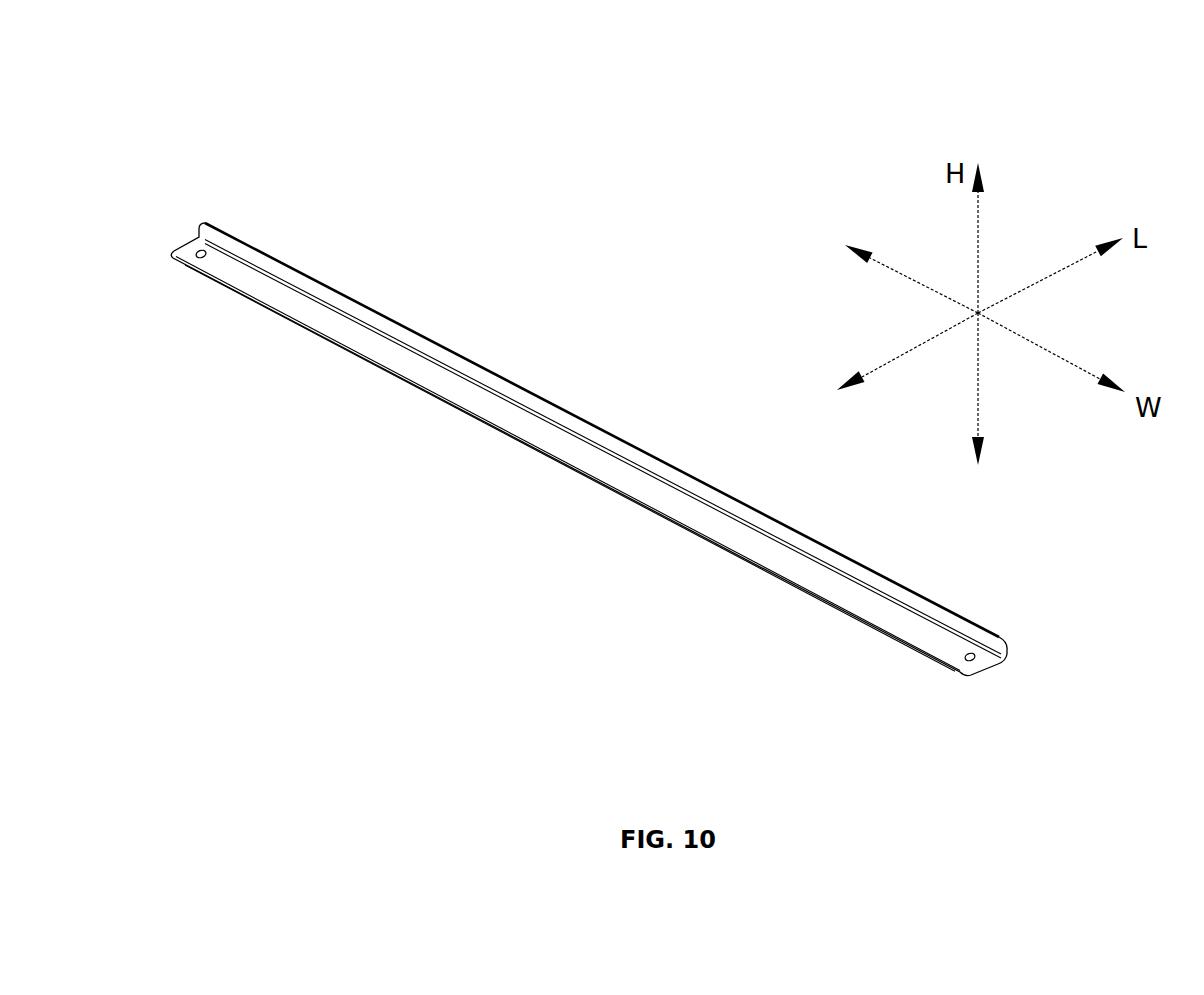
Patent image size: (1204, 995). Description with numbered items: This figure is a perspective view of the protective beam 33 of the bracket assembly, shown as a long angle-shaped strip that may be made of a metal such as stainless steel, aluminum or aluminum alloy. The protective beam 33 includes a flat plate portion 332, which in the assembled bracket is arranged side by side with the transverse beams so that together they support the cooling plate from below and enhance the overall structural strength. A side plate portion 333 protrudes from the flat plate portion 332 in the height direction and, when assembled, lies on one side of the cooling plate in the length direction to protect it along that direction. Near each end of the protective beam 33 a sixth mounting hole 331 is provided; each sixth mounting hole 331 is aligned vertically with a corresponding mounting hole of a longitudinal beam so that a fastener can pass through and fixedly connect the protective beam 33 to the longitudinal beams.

The protective beam 33 is at (589, 410).
The sixth mounting hole 331 is at (205, 252).
The flat plate portion 332 is at (470, 400).
The side plate portion 333 is at (617, 445).